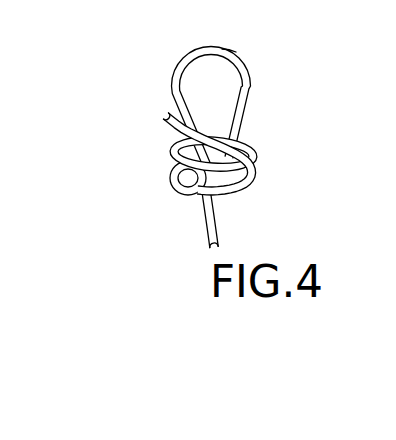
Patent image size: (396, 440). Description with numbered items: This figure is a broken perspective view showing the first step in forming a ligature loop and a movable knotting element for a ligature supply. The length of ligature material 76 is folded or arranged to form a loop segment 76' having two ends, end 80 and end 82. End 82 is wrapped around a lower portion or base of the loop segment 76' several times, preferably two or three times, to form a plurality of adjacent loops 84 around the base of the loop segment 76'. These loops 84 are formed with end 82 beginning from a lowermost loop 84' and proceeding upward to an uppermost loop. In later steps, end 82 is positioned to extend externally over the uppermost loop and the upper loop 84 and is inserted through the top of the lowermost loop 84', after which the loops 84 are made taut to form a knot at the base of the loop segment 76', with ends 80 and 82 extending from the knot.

The length of ligature material 76 is at (151, 221).
The loop segment 76' is at (270, 48).
The end 80 is at (207, 238).
The end 82 is at (161, 113).
The loops 84 is at (245, 159).
The lowermost loop 84' is at (144, 174).